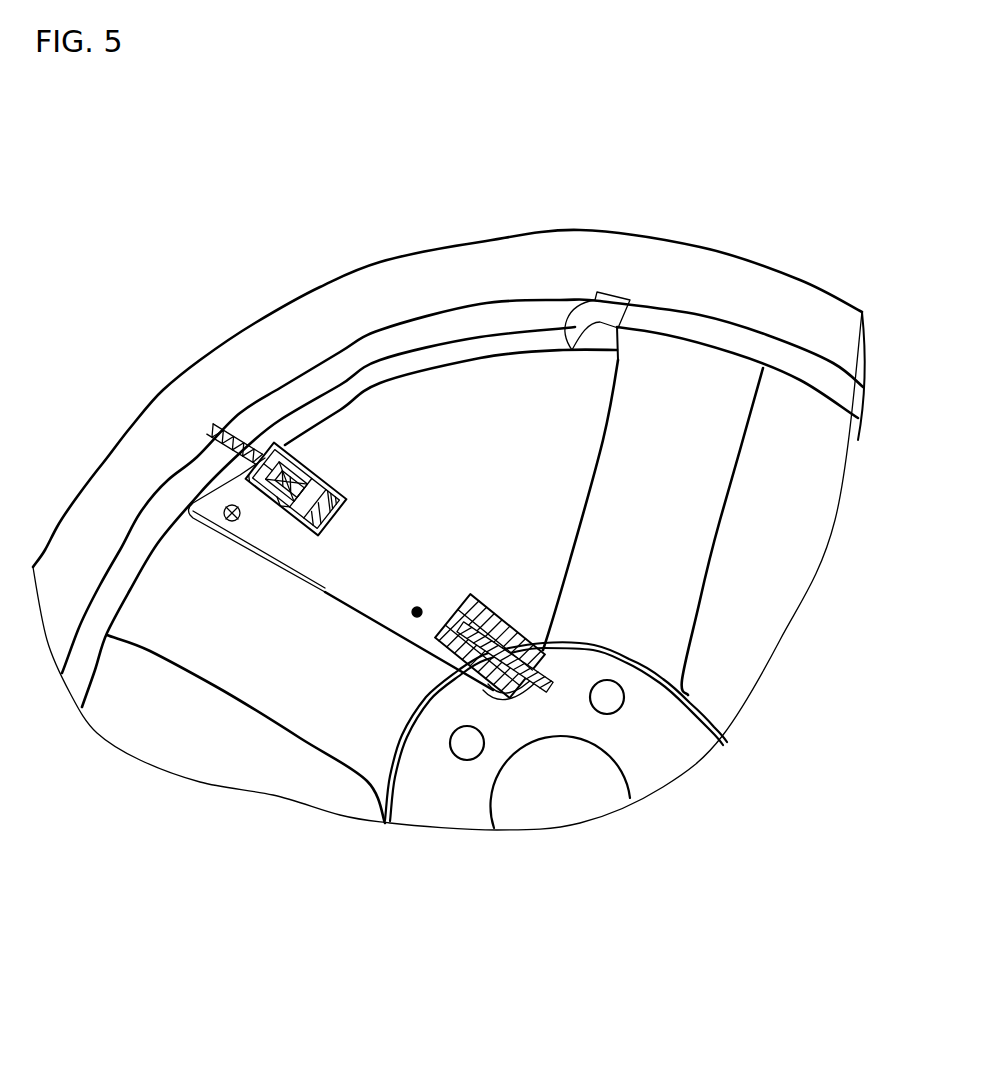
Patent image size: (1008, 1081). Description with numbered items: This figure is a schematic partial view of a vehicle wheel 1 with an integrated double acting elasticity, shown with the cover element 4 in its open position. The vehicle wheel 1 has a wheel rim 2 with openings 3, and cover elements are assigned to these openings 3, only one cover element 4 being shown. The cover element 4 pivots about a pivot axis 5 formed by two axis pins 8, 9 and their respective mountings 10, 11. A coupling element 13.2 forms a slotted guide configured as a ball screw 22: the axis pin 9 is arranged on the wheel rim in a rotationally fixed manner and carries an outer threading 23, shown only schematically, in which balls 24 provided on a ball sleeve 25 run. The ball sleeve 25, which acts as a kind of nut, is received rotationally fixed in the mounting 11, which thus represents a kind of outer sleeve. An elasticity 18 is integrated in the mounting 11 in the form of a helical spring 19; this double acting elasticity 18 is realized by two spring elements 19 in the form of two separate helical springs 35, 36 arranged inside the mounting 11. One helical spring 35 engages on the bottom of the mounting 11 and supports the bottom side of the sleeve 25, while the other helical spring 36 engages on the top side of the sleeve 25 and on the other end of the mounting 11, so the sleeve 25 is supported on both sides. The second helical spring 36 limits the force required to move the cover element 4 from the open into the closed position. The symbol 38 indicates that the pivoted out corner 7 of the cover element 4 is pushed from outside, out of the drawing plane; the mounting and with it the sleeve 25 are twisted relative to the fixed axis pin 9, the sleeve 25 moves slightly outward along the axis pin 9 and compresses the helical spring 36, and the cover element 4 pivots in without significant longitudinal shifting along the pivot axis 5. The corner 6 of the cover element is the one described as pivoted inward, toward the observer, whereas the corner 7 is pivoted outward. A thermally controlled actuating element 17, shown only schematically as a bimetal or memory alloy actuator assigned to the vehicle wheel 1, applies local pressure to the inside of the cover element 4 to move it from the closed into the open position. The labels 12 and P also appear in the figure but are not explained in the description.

The vehicle wheel 1 is at (634, 160).
The wheel rim 2 is at (807, 303).
The openings 3 is at (548, 342).
The cover element 4 is at (472, 387).
The pivot axis 5 is at (550, 668).
The right upper corner 6 is at (610, 365).
The pivoted out corner 7 is at (200, 474).
The axis pin 8 is at (541, 693).
The axis pin 9 is at (278, 440).
The mounting 10 is at (492, 697).
The mounting 11 is at (348, 472).
The spring 12 is at (238, 436).
The coupling element 13.2 is at (345, 518).
The thermally controlled actuating element 17 is at (417, 617).
The elasticity 18 is at (355, 486).
The helical spring 19 is at (297, 433).
The ball screw 22 is at (330, 458).
The outer threading 23 is at (312, 538).
The balls 24 is at (280, 490).
The ball sleeve 25 is at (335, 468).
The helical spring 35 is at (357, 498).
The helical spring 36 is at (243, 540).
The symbol 38 is at (228, 504).
The pivot direction P is at (592, 297).